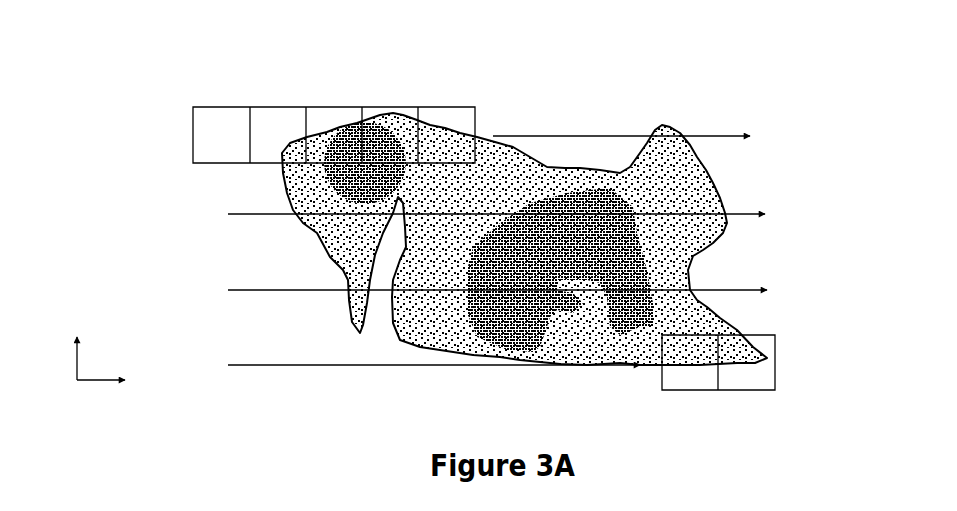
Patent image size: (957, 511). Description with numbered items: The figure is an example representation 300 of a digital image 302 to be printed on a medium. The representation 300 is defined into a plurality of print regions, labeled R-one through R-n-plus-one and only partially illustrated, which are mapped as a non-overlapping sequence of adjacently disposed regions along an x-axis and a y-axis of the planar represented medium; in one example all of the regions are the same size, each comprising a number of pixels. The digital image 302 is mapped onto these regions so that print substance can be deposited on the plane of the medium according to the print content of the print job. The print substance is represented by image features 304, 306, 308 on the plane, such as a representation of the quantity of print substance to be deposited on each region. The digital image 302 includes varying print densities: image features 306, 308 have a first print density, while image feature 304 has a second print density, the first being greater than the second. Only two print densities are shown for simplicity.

The representation 300 is at (145, 64).
The digital image 302 is at (557, 160).
The image feature 304 is at (673, 124).
The image feature 306 is at (337, 187).
The image feature 308 is at (630, 252).